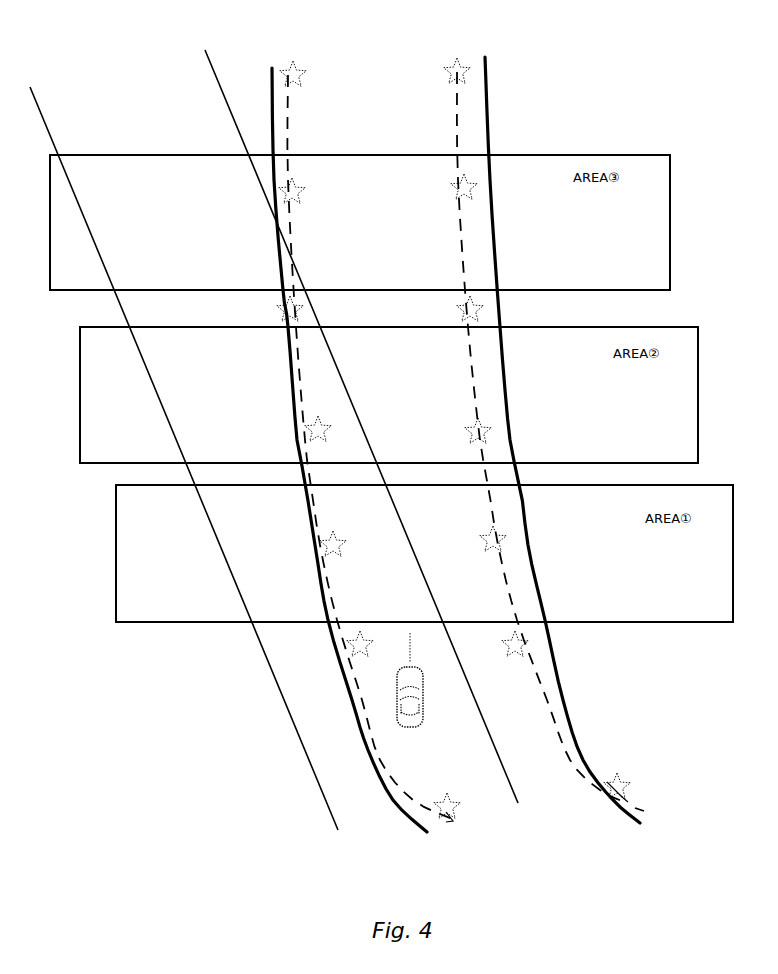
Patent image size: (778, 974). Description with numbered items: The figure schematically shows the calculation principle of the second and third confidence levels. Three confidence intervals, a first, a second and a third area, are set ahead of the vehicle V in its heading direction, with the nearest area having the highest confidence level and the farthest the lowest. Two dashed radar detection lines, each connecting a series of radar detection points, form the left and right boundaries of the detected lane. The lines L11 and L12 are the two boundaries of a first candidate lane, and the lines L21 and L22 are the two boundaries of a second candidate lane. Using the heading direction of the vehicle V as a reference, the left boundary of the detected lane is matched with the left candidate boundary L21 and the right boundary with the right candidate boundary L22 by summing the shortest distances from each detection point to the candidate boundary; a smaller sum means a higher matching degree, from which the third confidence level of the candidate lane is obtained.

The left boundary of first candidate lane L11 is at (187, 469).
The right boundary of first candidate lane L12 is at (366, 439).
The left boundary of second candidate lane L21 is at (354, 459).
The right boundary of second candidate lane L22 is at (571, 454).
The vehicle V is at (426, 691).